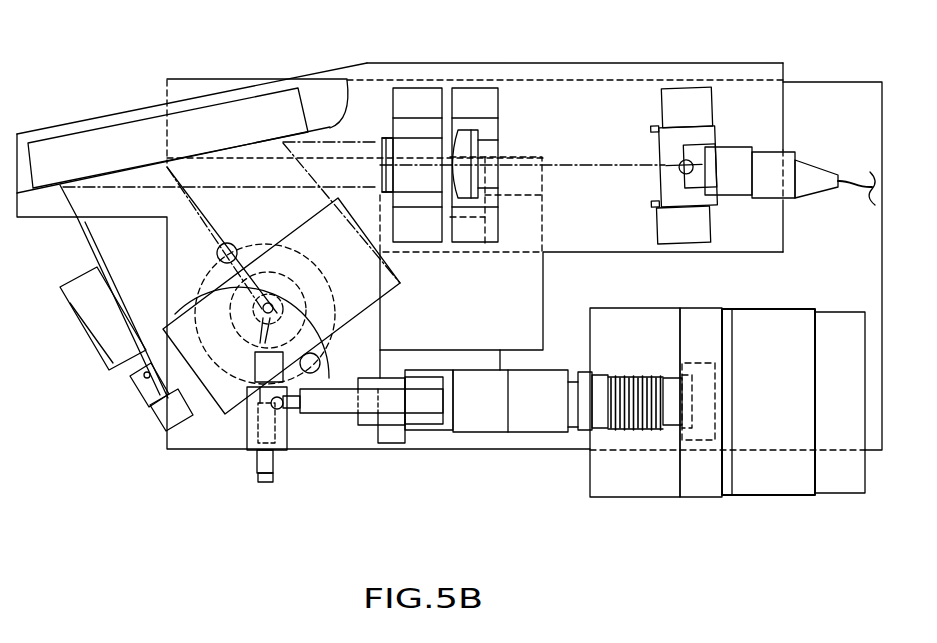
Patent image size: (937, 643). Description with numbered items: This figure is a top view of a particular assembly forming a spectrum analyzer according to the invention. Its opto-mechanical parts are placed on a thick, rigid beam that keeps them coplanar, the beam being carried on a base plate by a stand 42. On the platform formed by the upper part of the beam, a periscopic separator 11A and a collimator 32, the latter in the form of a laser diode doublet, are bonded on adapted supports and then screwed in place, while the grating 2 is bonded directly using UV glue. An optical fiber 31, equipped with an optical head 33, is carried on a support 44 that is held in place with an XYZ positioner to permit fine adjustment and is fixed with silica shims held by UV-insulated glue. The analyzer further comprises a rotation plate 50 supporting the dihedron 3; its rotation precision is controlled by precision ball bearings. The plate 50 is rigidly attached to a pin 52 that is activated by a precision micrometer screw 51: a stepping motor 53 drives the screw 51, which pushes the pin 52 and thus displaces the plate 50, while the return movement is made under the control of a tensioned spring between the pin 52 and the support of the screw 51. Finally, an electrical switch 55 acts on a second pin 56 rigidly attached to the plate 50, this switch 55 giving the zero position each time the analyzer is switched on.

The grating 2 is at (84, 122).
The periscopic separator 11A is at (420, 132).
The collimator 32 is at (480, 152).
The stand 42 is at (545, 210).
The optical head 33 is at (748, 147).
The optical fiber 31 is at (857, 178).
The support 44 is at (705, 225).
The dihedron 3 is at (373, 287).
The electrical switch 55 is at (86, 330).
The pin 56 is at (235, 378).
The pin 52 is at (287, 427).
The rotation plate 50 is at (325, 365).
The precision micrometer screw 51 is at (480, 430).
The stepping motor 53 is at (622, 437).